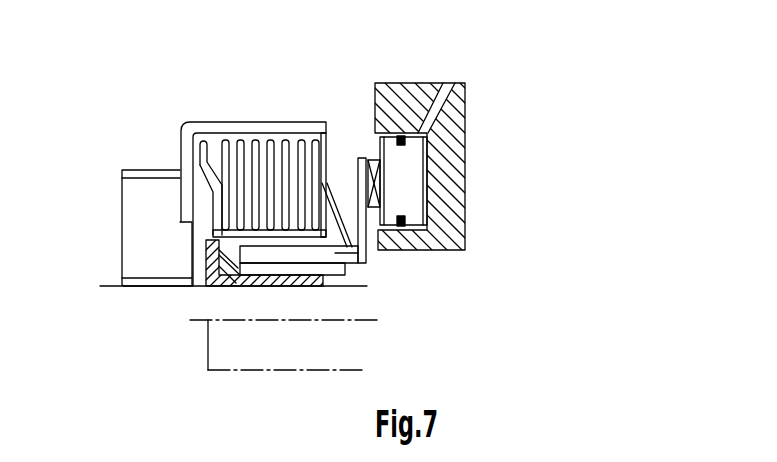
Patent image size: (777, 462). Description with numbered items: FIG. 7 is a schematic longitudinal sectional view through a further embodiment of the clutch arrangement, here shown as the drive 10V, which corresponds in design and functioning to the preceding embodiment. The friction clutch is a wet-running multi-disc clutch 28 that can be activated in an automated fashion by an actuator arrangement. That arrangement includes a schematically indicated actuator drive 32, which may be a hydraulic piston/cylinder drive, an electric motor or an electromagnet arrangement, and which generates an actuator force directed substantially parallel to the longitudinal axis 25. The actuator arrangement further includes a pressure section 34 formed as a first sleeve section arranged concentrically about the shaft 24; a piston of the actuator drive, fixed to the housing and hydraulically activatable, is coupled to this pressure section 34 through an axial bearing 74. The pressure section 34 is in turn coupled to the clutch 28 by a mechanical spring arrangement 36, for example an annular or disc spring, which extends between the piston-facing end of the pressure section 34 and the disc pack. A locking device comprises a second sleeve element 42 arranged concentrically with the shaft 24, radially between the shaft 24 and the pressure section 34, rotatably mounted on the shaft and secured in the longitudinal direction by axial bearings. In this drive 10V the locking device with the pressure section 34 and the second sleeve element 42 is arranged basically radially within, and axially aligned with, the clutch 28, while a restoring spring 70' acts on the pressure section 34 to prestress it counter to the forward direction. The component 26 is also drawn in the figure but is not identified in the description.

The drive 10V is at (505, 95).
The shaft 24 is at (345, 303).
The longitudinal axis 25 is at (313, 322).
The electronic component 26 is at (147, 193).
The wet-running multi-disc clutch 28 is at (268, 165).
The actuator drive 32 is at (419, 78).
The pressure section 34 is at (270, 250).
The spring arrangement 36 is at (333, 210).
The second sleeve element 42 is at (293, 267).
The axial bearing 74 is at (372, 152).
The restoring spring 70' is at (196, 338).